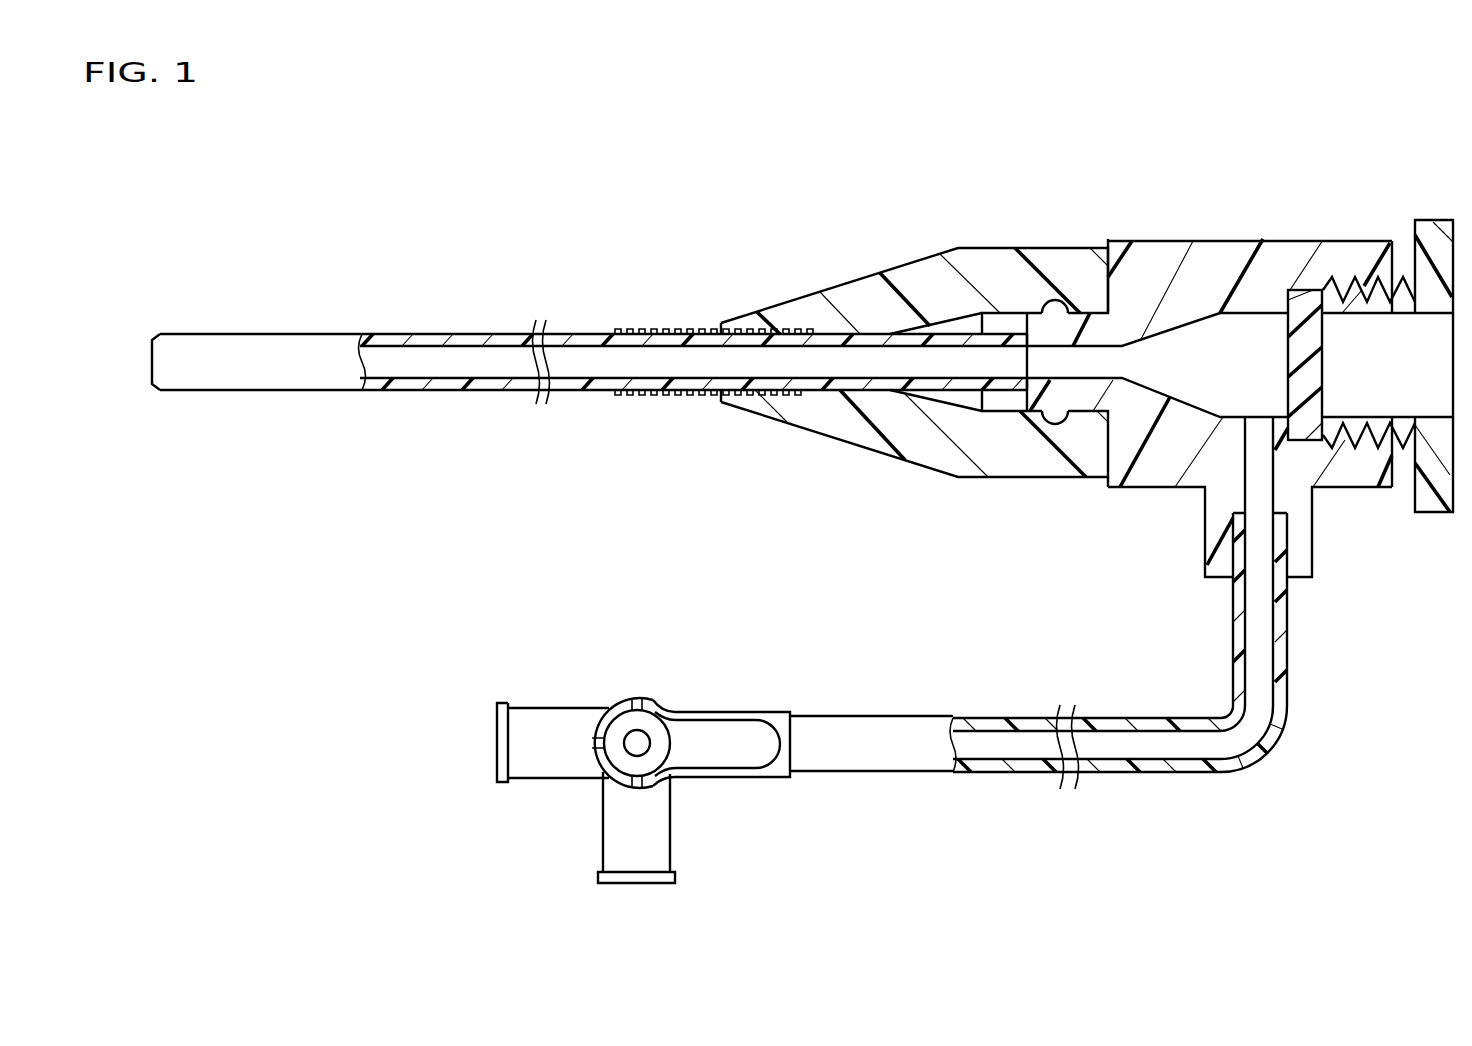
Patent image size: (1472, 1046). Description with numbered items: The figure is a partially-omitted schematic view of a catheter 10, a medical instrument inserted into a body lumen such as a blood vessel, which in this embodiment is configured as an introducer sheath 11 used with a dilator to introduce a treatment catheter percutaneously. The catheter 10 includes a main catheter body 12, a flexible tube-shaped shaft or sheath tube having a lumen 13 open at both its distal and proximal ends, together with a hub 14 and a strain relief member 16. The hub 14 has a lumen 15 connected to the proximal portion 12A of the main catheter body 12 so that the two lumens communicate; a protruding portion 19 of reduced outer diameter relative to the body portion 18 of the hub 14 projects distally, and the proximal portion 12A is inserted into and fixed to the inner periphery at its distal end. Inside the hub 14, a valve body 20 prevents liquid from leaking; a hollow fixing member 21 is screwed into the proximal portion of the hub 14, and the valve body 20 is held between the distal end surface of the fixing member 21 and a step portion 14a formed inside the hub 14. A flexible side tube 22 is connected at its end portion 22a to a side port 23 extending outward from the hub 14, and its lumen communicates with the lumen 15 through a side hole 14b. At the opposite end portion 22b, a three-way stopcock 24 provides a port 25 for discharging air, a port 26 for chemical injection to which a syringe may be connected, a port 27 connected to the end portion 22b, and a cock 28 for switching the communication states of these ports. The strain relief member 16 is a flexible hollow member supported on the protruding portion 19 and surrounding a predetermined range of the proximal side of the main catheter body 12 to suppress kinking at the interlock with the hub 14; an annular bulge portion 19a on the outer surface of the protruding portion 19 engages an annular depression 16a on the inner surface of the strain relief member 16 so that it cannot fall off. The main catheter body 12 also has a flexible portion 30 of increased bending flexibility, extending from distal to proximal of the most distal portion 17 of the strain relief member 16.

The catheter 10 is at (561, 184).
The introducer sheath 11 is at (591, 170).
The main catheter body 12 is at (418, 333).
The lumen 13 is at (421, 352).
The flexible portion 30 is at (692, 328).
The most distal portion 17 is at (721, 323).
The strain relief member 16 is at (975, 248).
The annular depression 16a is at (1057, 301).
The protruding portion 19 is at (1027, 330).
The bulge portion 19a is at (1052, 425).
The proximal portion 12A is at (1007, 388).
The hub 14 is at (1222, 239).
The body portion 18 is at (1166, 253).
The step portion 14a is at (1292, 300).
The side hole 14b is at (1260, 482).
The lumen 15 is at (1210, 385).
The valve body 20 is at (1308, 375).
The fixing member 21 is at (1431, 229).
The side tube 22 is at (1289, 660).
The end portion 22a is at (1278, 527).
The end portion 22b is at (818, 728).
The side port 23 is at (1302, 557).
The three-way stopcock 24 is at (632, 695).
The port 25 is at (635, 840).
The port 26 is at (548, 730).
The port 27 is at (745, 778).
The cock 28 is at (725, 740).